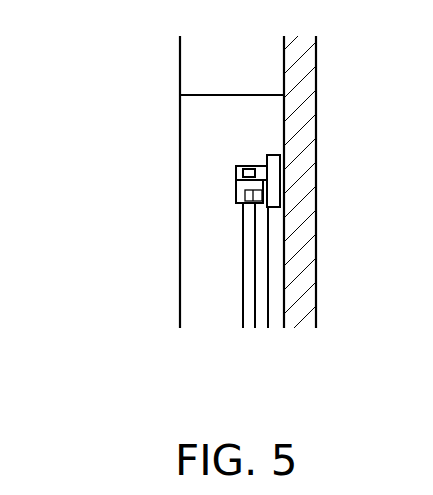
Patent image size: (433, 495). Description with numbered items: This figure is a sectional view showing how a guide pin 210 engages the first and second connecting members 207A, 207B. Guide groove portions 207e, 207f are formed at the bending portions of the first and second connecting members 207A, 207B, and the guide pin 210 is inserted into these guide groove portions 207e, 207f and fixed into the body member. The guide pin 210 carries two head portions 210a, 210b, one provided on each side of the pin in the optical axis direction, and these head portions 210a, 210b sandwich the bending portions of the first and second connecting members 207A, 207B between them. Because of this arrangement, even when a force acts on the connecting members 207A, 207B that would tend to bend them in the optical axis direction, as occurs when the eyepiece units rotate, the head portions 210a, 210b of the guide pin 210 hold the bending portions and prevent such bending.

The guide pin 210 is at (247, 199).
The head portion 210a is at (240, 197).
The head portion 210b is at (262, 172).
The guide groove portion 207e is at (263, 166).
The guide groove portion 207f is at (248, 203).
The first connecting member 207A is at (263, 260).
The second connecting member 207B is at (245, 275).